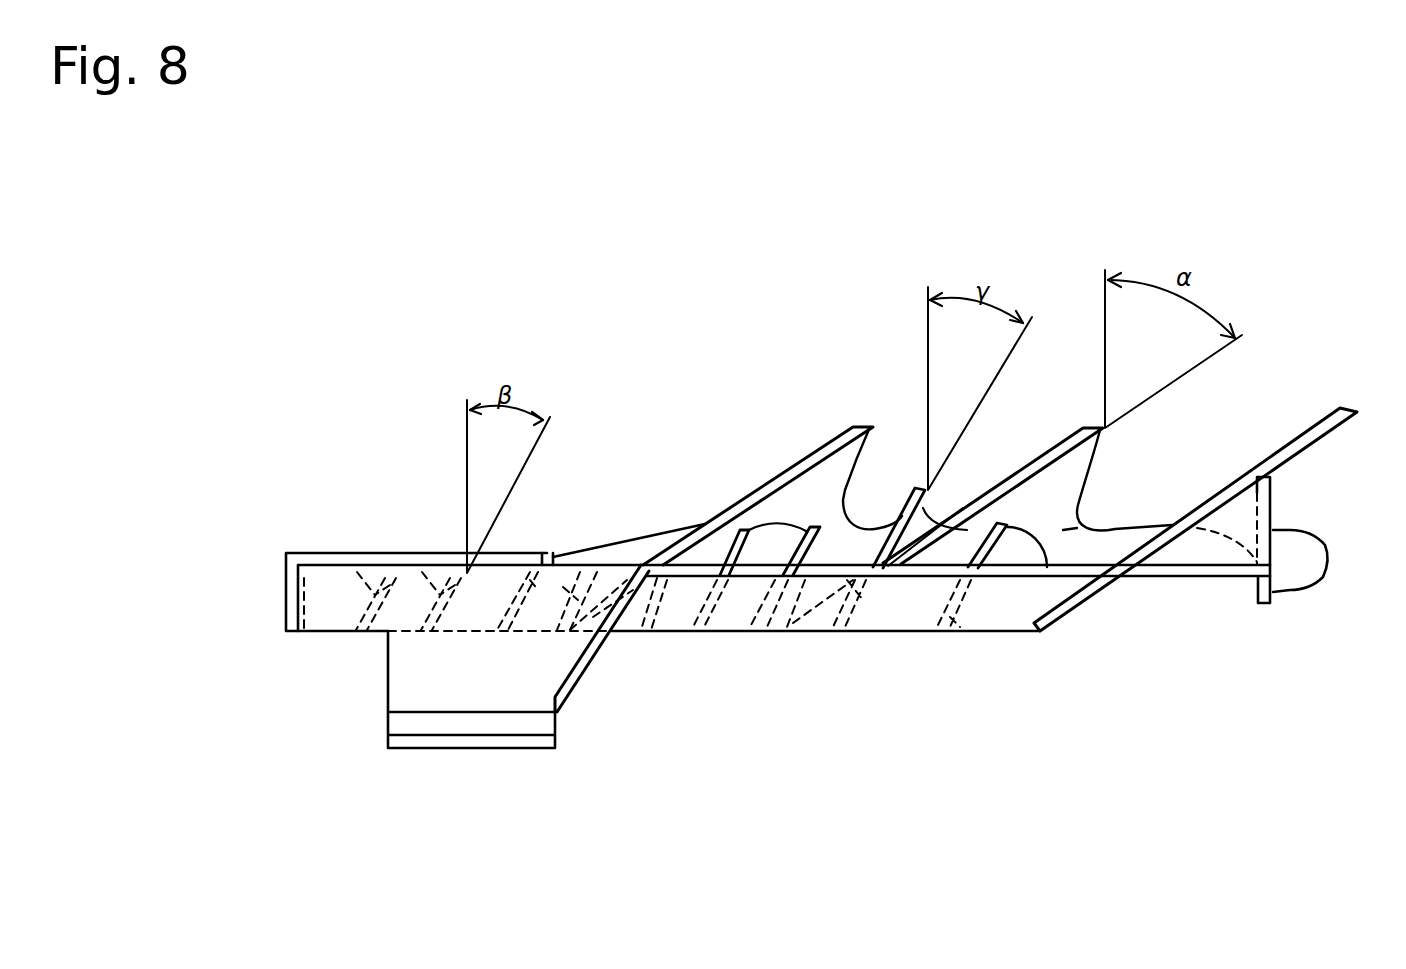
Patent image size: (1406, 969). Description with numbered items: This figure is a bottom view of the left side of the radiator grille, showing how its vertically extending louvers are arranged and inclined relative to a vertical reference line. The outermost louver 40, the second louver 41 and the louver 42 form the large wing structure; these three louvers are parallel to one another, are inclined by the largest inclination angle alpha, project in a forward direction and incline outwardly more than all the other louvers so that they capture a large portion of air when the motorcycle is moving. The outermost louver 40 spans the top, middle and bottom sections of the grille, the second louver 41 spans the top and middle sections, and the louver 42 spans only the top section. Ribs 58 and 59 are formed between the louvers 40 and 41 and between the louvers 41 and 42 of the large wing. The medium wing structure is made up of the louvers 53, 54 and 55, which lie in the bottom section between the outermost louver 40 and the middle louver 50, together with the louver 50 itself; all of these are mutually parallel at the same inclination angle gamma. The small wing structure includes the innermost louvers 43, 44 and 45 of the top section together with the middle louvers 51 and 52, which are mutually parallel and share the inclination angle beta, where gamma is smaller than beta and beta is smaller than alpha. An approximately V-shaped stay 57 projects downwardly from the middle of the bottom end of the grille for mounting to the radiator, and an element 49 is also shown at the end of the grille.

The outermost louver 40 is at (1292, 442).
The second louver 41 is at (1047, 452).
The louver 42 is at (843, 434).
The louver 43 is at (542, 550).
The louver 44 is at (420, 550).
The louver 45 is at (354, 550).
The end knob 49 is at (1315, 572).
The middle louver 50 is at (753, 523).
The middle louver 51 is at (661, 635).
The middle louver 52 is at (563, 548).
The louver 53 is at (965, 637).
The louver 54 is at (923, 508).
The louver 55 is at (843, 492).
The stay 57 is at (447, 743).
The rib 58 is at (1087, 528).
The rib 59 is at (862, 458).